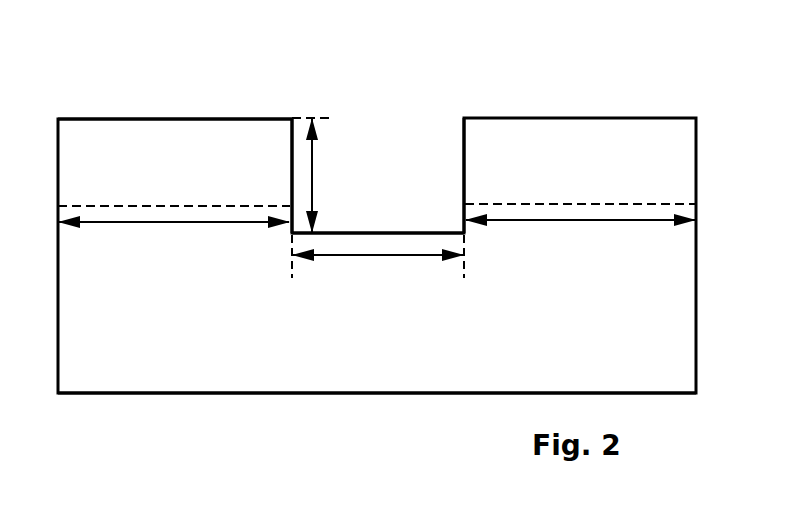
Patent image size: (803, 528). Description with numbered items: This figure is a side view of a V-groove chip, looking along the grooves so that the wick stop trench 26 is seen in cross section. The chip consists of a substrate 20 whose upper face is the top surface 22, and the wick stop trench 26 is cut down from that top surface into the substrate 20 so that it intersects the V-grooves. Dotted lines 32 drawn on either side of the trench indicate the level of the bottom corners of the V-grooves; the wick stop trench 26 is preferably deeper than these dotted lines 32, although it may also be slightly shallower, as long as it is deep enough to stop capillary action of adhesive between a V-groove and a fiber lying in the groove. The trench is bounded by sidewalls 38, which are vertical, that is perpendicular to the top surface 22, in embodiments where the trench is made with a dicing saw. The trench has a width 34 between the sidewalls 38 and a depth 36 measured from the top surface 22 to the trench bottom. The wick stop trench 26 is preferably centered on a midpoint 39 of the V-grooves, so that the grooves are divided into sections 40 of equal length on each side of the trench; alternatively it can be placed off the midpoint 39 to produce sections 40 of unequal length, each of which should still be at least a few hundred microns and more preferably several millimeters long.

The substrate 20 is at (377, 255).
The top surface 22 is at (65, 118).
The wick stop trench 26 is at (377, 133).
The dotted lines 32 is at (138, 205).
The width 34 is at (380, 257).
The depth 36 is at (312, 173).
The sidewalls 38 is at (290, 147).
The midpoint 39 is at (380, 394).
The sections 40 is at (175, 223).